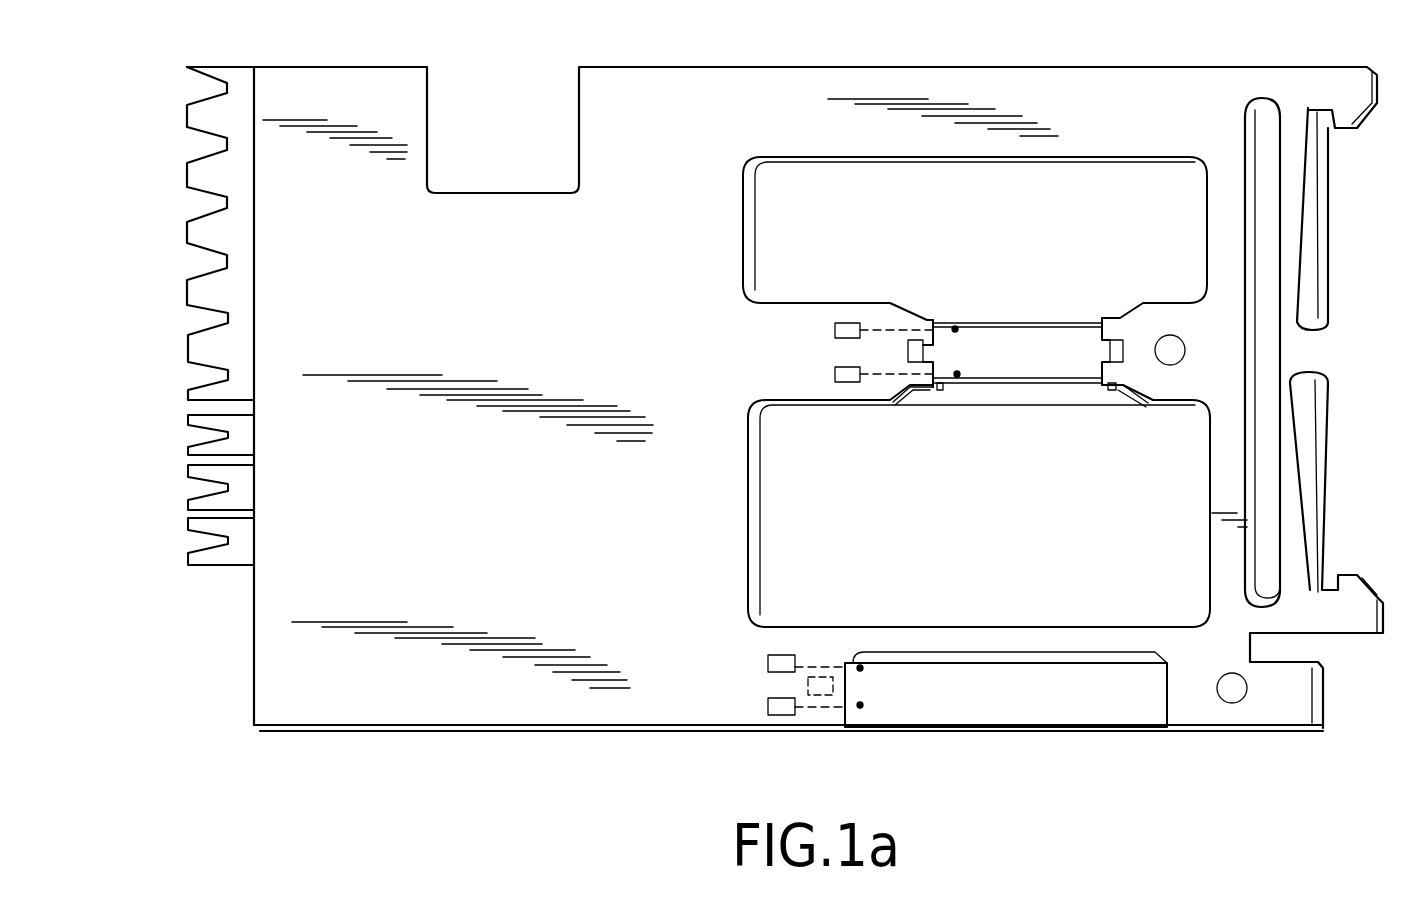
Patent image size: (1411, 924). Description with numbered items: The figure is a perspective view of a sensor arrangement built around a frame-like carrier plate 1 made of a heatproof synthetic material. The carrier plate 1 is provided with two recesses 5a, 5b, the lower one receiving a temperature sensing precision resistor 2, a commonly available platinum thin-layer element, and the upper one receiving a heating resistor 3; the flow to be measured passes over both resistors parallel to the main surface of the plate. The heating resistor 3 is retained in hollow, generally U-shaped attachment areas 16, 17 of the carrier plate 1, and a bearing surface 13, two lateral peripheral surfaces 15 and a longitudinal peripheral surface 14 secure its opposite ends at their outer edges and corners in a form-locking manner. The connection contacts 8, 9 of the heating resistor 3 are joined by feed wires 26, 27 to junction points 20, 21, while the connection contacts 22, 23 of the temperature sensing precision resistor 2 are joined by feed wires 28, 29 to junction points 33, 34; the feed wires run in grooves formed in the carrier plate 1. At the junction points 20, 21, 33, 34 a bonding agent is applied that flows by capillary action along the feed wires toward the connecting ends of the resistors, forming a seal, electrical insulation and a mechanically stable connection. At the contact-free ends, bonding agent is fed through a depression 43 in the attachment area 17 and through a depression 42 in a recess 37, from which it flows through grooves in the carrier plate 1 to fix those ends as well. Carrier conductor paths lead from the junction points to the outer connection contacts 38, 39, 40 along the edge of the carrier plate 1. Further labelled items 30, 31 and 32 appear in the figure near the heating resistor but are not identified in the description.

The carrier plate 1 is at (280, 692).
The temperature sensing precision resistor 2 is at (1000, 695).
The heating resistor 3 is at (1012, 352).
The recess 5a is at (1078, 731).
The recess 5b is at (1113, 175).
The connection contact 8 is at (957, 374).
The connection contact 9 is at (955, 329).
The bearing surface 13 is at (1100, 388).
The longitudinal peripheral surface 14 is at (1128, 361).
The lateral peripheral surface 15 is at (1102, 316).
The attachment area 16 is at (927, 385).
The attachment area 17 is at (1120, 391).
The junction point 20 is at (848, 382).
The junction point 21 is at (848, 323).
The connection contact 22 is at (860, 705).
The connection contact 23 is at (862, 668).
The feed wire 26 is at (867, 375).
The feed wire 27 is at (887, 328).
The feed wire 28 is at (827, 708).
The feed wire 29 is at (818, 662).
The left terminal pin 30 is at (926, 352).
The right terminal pin 31 is at (1104, 350).
The component body 32 is at (1015, 360).
The junction point 33 is at (768, 705).
The junction point 34 is at (768, 665).
The recess 37 is at (1168, 730).
The outer connection contact 38 is at (188, 524).
The outer connection contact 39 is at (188, 470).
The outer connection contact 40 is at (188, 417).
The depression 42 is at (1232, 688).
The depression 43 is at (1170, 350).